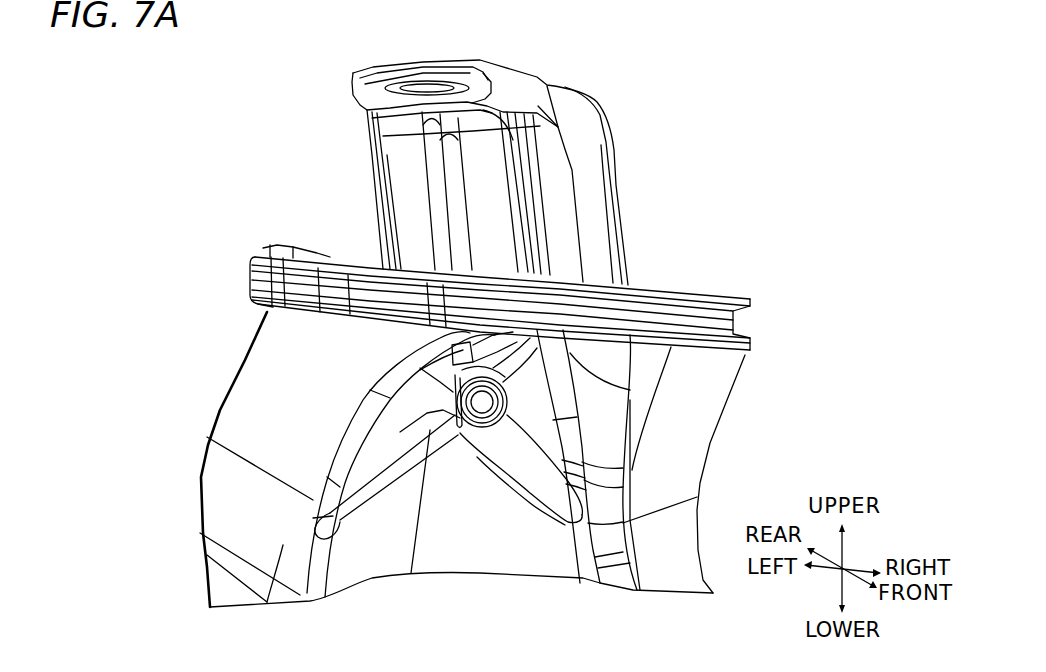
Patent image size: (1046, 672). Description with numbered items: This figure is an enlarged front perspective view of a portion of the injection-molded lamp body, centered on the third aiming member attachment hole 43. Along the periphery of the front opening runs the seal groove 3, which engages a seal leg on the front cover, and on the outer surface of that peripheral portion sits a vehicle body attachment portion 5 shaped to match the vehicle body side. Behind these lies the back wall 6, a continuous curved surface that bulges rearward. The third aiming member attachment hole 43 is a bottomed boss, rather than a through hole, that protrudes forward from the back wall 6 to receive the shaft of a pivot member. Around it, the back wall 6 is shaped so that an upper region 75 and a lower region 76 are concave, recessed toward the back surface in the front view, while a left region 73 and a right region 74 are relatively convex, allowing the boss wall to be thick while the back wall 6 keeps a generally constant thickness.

The seal groove 3 is at (317, 285).
The vehicle body attachment portion 5 is at (592, 223).
The back wall 6 is at (255, 401).
The third aiming member attachment hole 43 is at (474, 402).
The left region 73 is at (420, 411).
The right region 74 is at (543, 409).
The upper region 75 is at (456, 352).
The lower region 76 is at (462, 459).